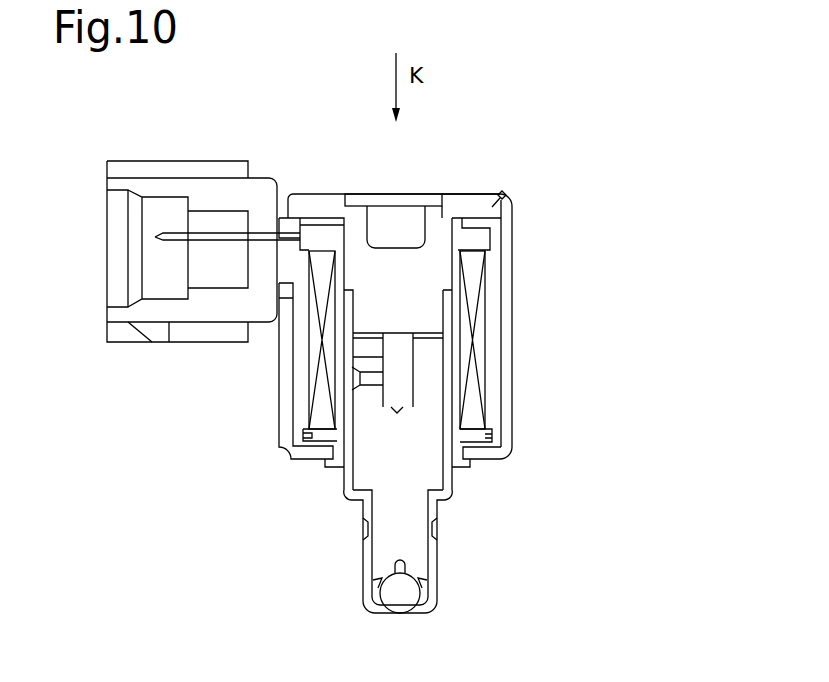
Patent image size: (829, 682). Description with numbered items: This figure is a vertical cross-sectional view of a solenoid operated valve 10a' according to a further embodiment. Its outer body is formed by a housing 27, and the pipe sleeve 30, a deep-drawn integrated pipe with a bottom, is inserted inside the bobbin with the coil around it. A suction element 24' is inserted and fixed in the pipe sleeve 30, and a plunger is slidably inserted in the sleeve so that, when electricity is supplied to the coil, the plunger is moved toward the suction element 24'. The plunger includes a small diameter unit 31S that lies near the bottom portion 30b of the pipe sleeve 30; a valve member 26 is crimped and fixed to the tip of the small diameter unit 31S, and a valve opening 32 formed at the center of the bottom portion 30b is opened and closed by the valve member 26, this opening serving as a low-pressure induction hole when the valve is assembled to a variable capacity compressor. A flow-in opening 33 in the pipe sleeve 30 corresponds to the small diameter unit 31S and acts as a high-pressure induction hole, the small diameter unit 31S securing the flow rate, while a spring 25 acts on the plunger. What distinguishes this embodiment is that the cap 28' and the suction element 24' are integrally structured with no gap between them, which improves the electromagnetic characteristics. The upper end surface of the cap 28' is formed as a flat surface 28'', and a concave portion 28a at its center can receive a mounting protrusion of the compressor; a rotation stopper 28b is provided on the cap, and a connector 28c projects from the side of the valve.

The connector 28c is at (203, 162).
The concave portion 28a is at (378, 227).
The rotation stopper 28b is at (405, 200).
The flat surface 28'' is at (480, 175).
The cap 28' is at (539, 183).
The solenoid operated valve 10a' is at (458, 311).
The suction element 24' is at (445, 340).
The housing 27 is at (513, 348).
The spring 25 is at (372, 362).
The pipe sleeve 30 is at (347, 417).
The flow-in opening 33 is at (437, 528).
The small diameter unit 31S is at (395, 538).
The valve member 26 is at (403, 593).
The valve opening 32 is at (397, 617).
The bottom portion 30b is at (436, 616).